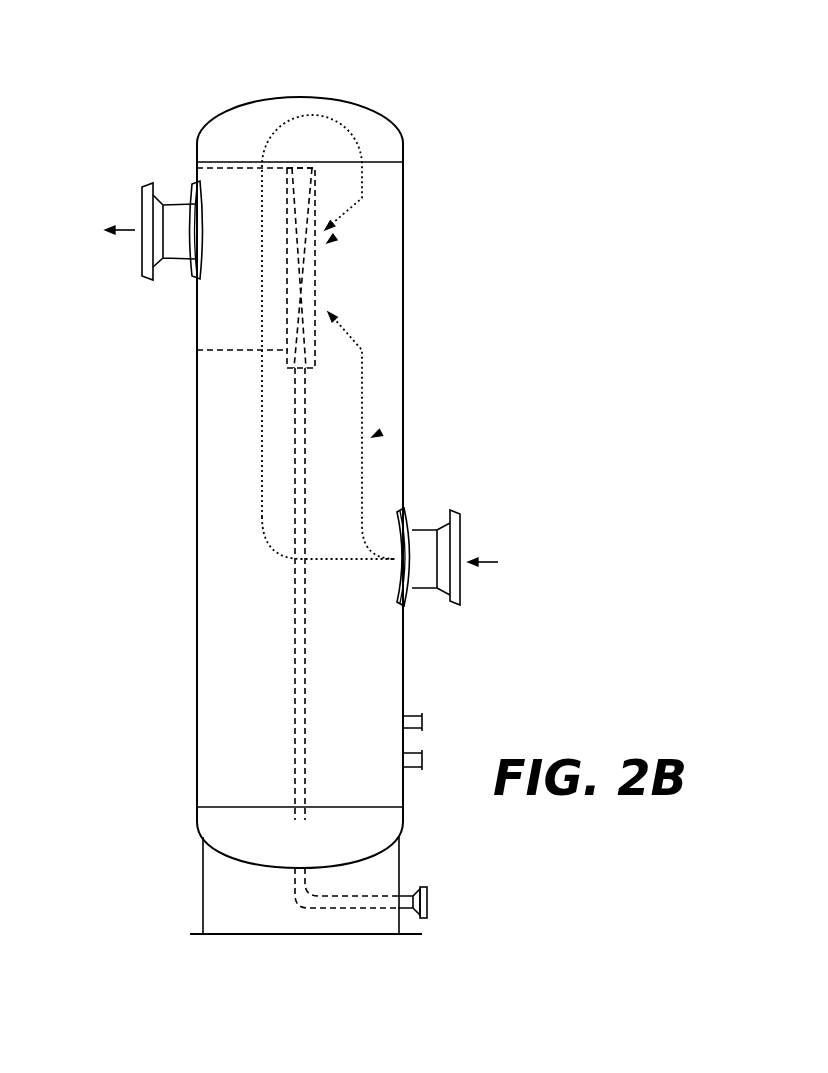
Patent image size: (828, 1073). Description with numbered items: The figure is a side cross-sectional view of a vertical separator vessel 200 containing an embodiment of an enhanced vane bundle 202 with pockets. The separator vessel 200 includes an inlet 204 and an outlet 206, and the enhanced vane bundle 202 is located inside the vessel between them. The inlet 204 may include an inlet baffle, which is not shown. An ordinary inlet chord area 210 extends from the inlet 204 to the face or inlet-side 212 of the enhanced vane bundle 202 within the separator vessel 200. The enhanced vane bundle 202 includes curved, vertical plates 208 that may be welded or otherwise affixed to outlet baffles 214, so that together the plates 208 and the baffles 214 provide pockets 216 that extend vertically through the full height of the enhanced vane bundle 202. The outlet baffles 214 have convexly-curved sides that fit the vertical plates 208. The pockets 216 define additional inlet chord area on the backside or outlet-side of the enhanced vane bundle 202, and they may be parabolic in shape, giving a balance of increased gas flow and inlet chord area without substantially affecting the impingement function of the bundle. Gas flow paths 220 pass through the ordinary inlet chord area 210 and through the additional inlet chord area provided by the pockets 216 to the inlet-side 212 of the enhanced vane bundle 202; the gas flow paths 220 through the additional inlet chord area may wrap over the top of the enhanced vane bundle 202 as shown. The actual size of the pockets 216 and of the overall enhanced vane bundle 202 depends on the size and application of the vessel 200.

The separator vessel 200 is at (70, 217).
The enhanced vane bundle 202 is at (300, 267).
The inlet 204 is at (423, 530).
The outlet 206 is at (172, 208).
The curved vertical plates 208 is at (233, 311).
The ordinary inlet chord area 210 is at (376, 435).
The inlet-side 212 is at (330, 241).
The outlet baffles 214 is at (243, 170).
The pockets 216 is at (193, 340).
The gas flow paths 220 is at (334, 517).